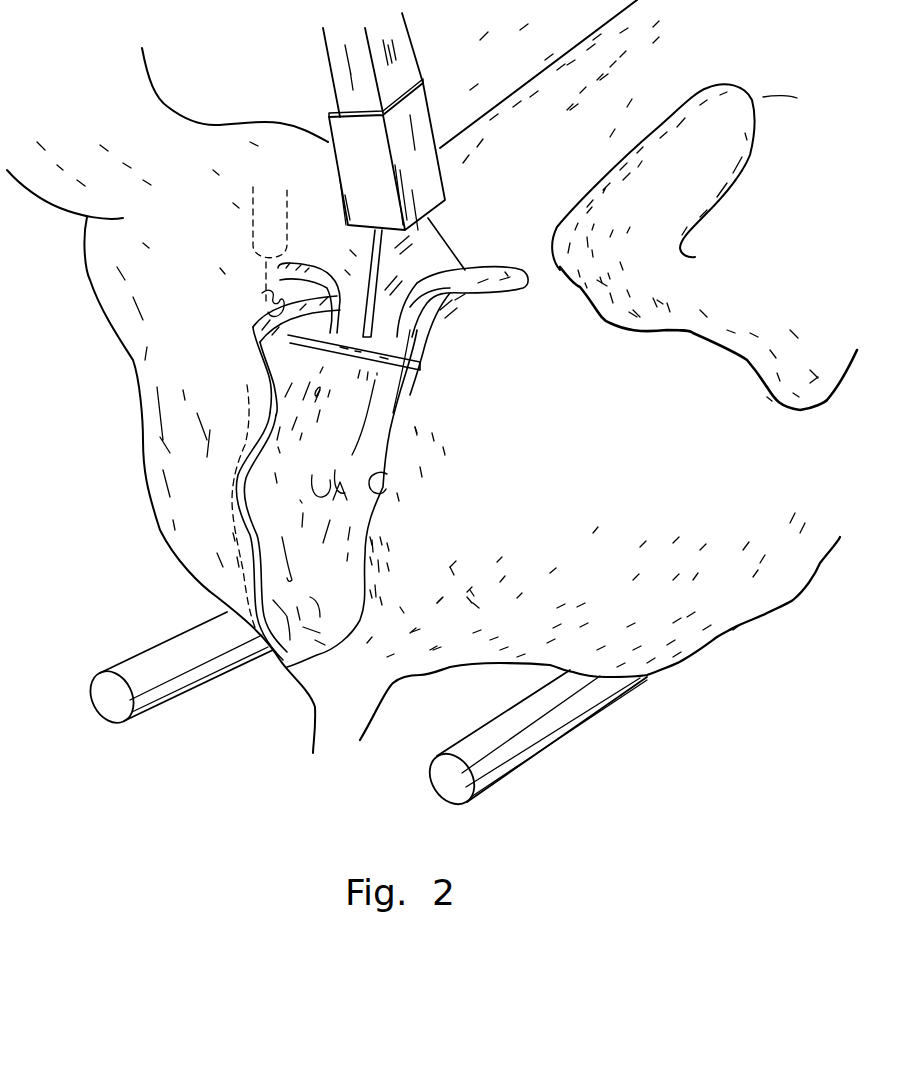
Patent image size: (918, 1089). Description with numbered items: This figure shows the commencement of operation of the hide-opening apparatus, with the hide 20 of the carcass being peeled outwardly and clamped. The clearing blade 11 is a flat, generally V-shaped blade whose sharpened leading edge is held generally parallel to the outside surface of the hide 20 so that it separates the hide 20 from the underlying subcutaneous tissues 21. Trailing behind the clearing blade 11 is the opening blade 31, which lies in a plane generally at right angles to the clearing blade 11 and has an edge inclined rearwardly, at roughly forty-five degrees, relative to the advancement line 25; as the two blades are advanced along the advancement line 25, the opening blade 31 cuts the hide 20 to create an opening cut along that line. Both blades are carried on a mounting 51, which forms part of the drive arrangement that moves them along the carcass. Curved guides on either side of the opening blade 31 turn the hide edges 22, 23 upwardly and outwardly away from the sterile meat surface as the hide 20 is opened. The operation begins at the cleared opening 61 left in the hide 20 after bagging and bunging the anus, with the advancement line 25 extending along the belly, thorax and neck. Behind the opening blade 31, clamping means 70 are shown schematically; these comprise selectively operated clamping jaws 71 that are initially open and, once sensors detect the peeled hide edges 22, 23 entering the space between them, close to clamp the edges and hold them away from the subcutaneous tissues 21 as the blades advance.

The clearing blade 11 is at (388, 350).
The hide 20 is at (520, 97).
The subcutaneous tissues 21 is at (342, 397).
The hide edge 22 is at (253, 335).
The hide edge 23 is at (457, 307).
The advancement line 25 is at (477, 253).
The opening blade 31 is at (435, 250).
The mounting 51 is at (327, 113).
The cleared opening 61 is at (387, 476).
The clamping means 70 is at (270, 248).
The clamping jaws 71 is at (253, 315).